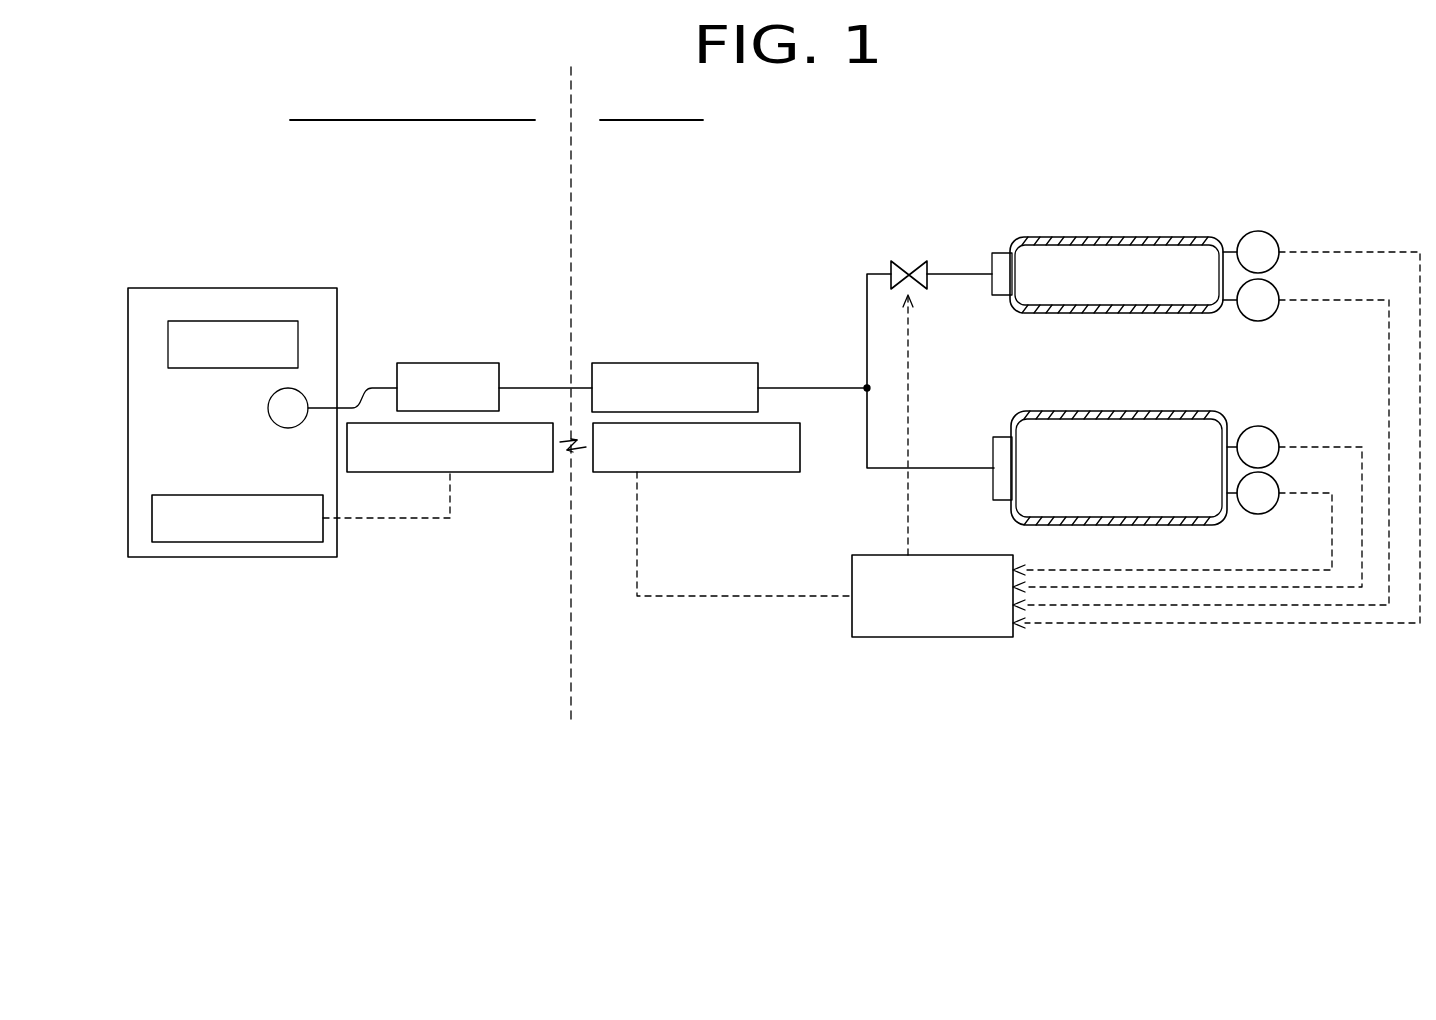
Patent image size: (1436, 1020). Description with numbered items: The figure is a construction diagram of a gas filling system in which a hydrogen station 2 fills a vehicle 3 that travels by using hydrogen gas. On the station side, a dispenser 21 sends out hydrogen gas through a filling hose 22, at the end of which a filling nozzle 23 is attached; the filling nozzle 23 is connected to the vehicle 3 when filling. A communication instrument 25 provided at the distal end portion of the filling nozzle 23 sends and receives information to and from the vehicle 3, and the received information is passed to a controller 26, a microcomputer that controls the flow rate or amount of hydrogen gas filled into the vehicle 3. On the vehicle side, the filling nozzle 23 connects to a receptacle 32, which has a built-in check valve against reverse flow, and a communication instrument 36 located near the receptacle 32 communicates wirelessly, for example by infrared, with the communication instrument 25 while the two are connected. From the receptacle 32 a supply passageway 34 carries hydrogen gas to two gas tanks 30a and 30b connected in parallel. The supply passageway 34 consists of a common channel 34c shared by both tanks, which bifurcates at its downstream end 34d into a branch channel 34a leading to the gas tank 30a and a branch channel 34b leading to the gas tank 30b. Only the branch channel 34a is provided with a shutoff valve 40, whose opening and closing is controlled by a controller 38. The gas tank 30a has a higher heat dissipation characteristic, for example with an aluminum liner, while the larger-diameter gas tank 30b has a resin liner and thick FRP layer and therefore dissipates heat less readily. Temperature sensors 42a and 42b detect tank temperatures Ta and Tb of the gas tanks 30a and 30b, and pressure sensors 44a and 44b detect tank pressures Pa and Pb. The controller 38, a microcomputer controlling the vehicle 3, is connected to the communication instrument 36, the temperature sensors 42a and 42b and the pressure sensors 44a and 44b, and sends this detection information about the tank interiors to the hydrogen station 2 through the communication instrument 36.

The hydrogen station 2 is at (431, 226).
The vehicle 3 is at (688, 226).
The dispenser 21 is at (290, 298).
The filling hose 22 is at (378, 388).
The filling nozzle 23 is at (471, 363).
The communication instrument 25 is at (412, 472).
The controller 26 is at (250, 495).
The gas tank 30a is at (1073, 237).
The gas tank 30b is at (1068, 411).
The receptacle 32 is at (660, 363).
The supply passageway 34 is at (864, 402).
The branch channel 34a is at (866, 317).
The branch channel 34b is at (866, 437).
The common channel 34c is at (810, 388).
The downstream end 34d is at (866, 390).
The communication instrument 36 is at (631, 472).
The controller 38 is at (943, 637).
The shutoff valve 40 is at (912, 262).
The temperature sensor 42a is at (1263, 232).
The temperature sensor 42b is at (1265, 427).
The pressure sensor 44a is at (1263, 321).
The pressure sensor 44b is at (1262, 514).